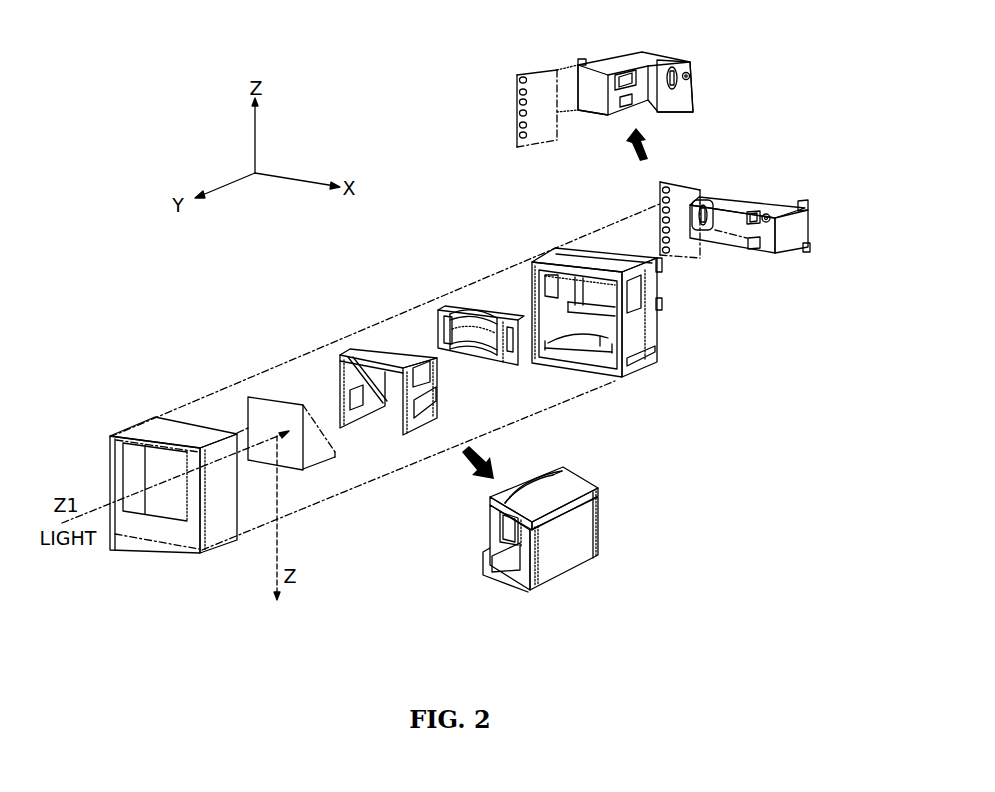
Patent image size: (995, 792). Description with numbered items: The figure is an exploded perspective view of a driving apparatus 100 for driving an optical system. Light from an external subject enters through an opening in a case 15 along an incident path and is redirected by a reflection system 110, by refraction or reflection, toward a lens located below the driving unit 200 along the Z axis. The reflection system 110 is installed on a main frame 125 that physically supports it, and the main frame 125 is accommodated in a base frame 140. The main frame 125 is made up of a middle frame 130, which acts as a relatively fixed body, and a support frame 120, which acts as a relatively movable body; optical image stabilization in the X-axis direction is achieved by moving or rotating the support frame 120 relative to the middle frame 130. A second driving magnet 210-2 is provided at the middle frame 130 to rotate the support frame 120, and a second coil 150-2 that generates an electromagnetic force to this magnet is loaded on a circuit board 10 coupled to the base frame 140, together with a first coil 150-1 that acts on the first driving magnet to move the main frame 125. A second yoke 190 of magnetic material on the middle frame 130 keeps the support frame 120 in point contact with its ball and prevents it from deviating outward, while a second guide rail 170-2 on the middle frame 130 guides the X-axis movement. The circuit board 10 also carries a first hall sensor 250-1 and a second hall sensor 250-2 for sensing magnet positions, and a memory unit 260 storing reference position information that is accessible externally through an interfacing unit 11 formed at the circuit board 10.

The circuit board 10 is at (543, 72).
The interfacing unit 11 is at (517, 97).
The case 15 is at (163, 533).
The driving apparatus 100 is at (701, 459).
The reflection system 110 is at (253, 413).
The support frame 120 is at (361, 348).
The main frame 125 is at (420, 250).
The middle frame 130 is at (441, 310).
The base frame 140 is at (648, 330).
The first coil 150-1 is at (623, 70).
The second coil 150-2 is at (673, 90).
The second guide rail 170-2 is at (474, 315).
The second yoke 190 is at (503, 360).
The driving unit 200 is at (715, 133).
The second driving magnet 210-2 is at (440, 376).
The first hall sensor 250-1 is at (766, 224).
The second hall sensor 250-2 is at (694, 78).
The memory unit 260 is at (628, 107).